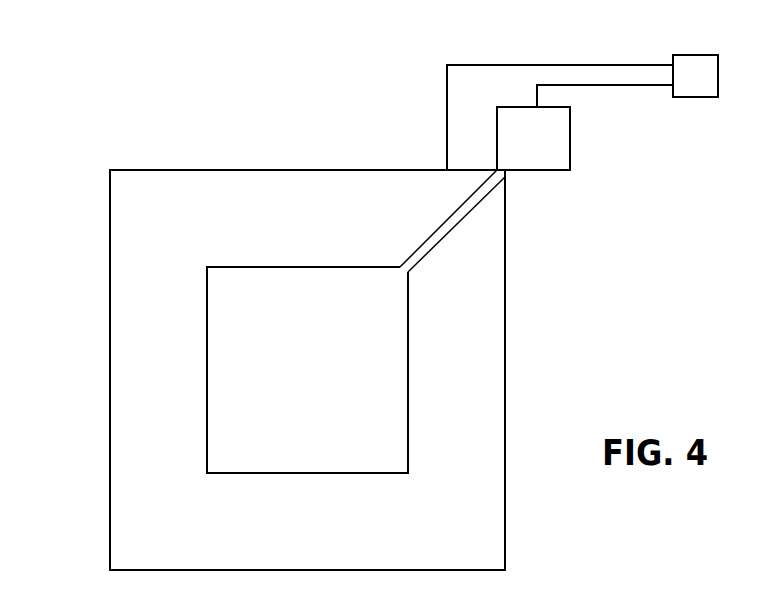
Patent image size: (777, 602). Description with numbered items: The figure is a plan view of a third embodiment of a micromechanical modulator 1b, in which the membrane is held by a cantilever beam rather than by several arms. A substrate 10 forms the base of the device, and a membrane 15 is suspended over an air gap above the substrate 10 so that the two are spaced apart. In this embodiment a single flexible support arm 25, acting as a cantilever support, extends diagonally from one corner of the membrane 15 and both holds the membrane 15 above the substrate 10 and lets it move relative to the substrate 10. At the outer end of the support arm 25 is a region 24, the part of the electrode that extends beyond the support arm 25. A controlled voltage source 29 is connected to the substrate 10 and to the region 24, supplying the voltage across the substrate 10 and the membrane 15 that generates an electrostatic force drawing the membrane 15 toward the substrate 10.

The micromechanical modulator 1b is at (74, 82).
The substrate 10 is at (285, 188).
The membrane 15 is at (397, 357).
The region 24 is at (570, 137).
The support arm 25 is at (448, 215).
The controlled voltage source 29 is at (697, 55).